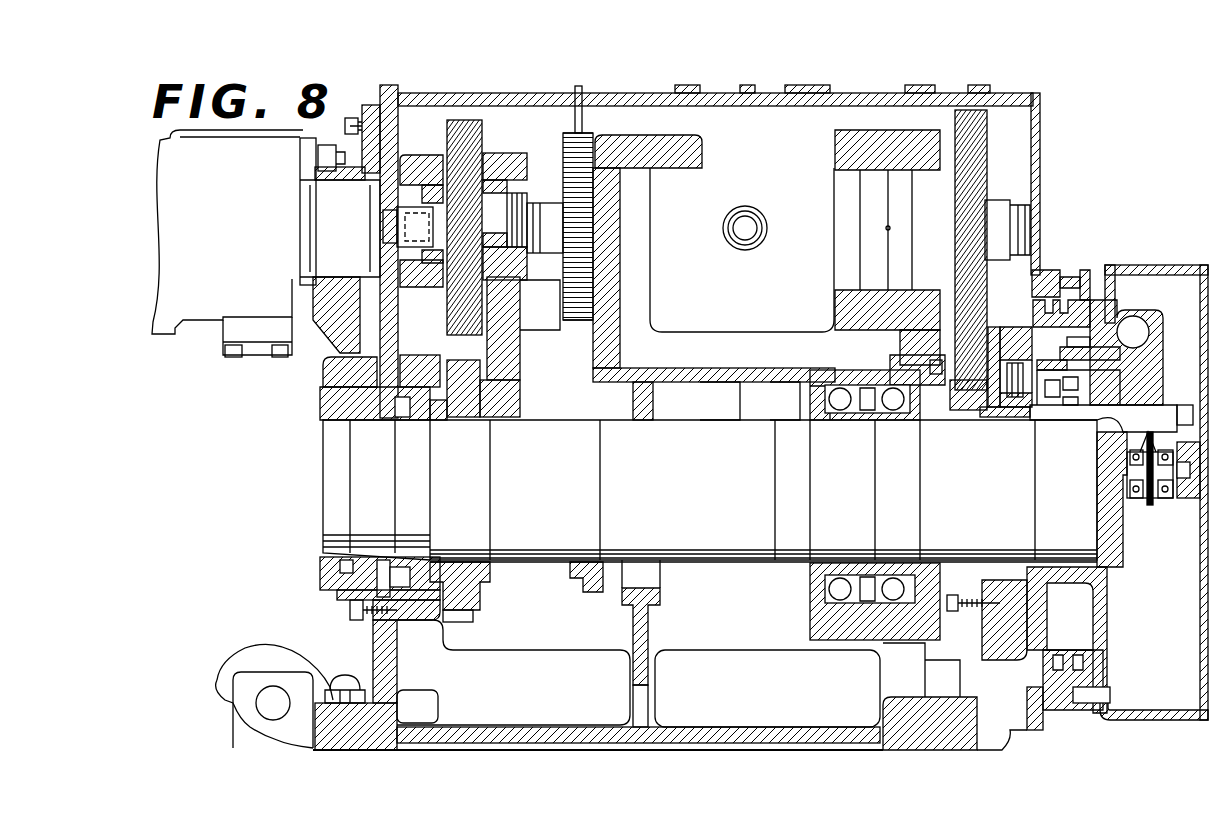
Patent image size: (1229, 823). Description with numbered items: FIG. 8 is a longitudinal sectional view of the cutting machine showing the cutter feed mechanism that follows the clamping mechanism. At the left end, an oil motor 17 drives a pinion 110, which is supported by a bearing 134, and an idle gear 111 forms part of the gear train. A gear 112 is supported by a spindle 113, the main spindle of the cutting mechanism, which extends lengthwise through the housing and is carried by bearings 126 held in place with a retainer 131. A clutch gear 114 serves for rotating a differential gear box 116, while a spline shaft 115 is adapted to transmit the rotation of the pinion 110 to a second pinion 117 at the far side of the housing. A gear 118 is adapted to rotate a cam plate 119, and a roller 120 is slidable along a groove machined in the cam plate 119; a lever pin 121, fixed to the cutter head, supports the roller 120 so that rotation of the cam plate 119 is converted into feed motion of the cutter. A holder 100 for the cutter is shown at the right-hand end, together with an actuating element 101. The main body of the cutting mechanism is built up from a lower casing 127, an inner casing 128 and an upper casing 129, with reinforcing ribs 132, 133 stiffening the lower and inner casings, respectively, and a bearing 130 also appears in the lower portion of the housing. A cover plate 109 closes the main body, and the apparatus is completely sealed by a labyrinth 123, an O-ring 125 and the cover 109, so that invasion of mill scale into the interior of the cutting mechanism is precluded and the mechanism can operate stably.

The oil motor 17 is at (262, 237).
The holder 100 is at (1148, 322).
The switch actuator bolt 101 is at (1151, 505).
The cover plate 109 is at (1042, 166).
The pinion 110 is at (476, 150).
The idle gear 111 is at (510, 345).
The gear 112 is at (461, 410).
The spindle 113 is at (705, 456).
The clutch gear 114 is at (585, 142).
The spline shaft 115 is at (530, 208).
The differential gear box 116 is at (757, 228).
The pinion 117 is at (1030, 170).
The gear 118 is at (972, 400).
The cam plate 119 is at (985, 410).
The roller 120 is at (1015, 398).
The lever pin 121 is at (1082, 405).
The labyrinth 123 is at (1110, 620).
The O-ring 125 is at (1150, 346).
The bearing 126 is at (890, 577).
The lower casing 127 is at (690, 743).
The inner casing 128 is at (890, 364).
The upper casing 129 is at (393, 138).
The roller bearing 130 is at (410, 565).
The retainer 131 is at (357, 372).
The reinforcing rib 132 is at (640, 585).
The reinforcing rib 133 is at (648, 388).
The bearing 134 is at (518, 165).